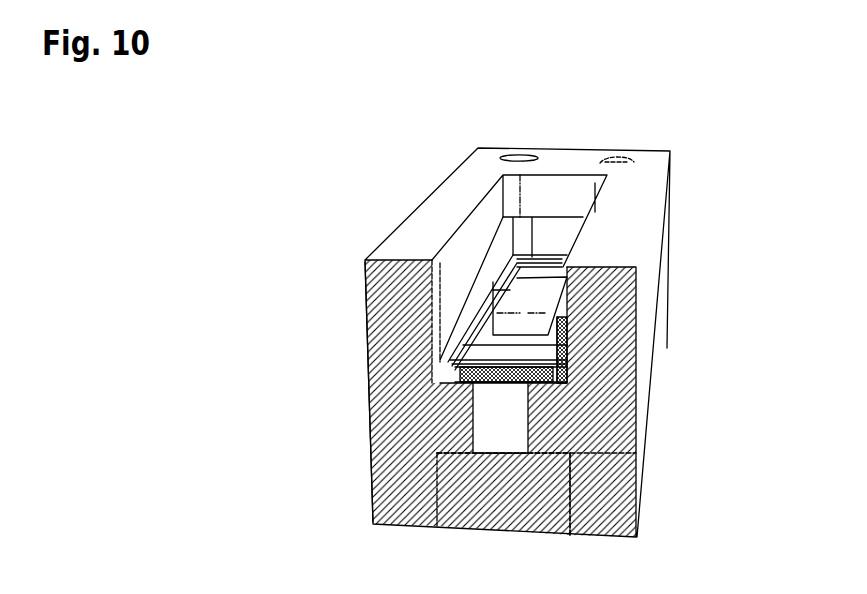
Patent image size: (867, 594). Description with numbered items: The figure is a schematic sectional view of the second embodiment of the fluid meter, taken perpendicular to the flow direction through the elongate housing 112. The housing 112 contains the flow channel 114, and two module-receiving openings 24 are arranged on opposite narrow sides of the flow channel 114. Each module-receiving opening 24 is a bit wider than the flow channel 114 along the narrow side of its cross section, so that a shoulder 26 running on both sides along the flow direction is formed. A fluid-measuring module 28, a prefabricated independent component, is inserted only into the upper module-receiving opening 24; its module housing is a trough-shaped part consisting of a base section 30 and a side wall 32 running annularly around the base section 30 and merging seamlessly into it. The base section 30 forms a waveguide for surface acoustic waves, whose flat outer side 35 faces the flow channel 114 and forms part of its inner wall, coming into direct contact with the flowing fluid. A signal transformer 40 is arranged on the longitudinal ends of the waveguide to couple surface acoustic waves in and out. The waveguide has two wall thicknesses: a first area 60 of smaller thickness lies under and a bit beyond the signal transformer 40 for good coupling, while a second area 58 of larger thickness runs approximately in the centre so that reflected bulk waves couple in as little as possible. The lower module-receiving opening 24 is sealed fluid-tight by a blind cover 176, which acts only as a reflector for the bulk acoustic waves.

The module-receiving opening 24 is at (441, 298).
The shoulder 26 is at (568, 383).
The fluid-measuring module 28 is at (543, 253).
The base section 30 is at (473, 386).
The side wall 32 is at (472, 362).
The outer side 35 is at (553, 364).
The signal transformer 40 is at (553, 260).
The second area 58 is at (538, 296).
The first area 60 is at (533, 278).
The elongate housing 112 is at (391, 294).
The flow channel 114 is at (498, 430).
The blind cover 176 is at (558, 500).